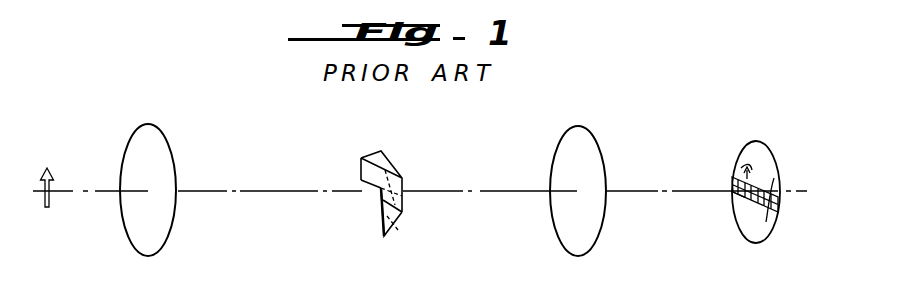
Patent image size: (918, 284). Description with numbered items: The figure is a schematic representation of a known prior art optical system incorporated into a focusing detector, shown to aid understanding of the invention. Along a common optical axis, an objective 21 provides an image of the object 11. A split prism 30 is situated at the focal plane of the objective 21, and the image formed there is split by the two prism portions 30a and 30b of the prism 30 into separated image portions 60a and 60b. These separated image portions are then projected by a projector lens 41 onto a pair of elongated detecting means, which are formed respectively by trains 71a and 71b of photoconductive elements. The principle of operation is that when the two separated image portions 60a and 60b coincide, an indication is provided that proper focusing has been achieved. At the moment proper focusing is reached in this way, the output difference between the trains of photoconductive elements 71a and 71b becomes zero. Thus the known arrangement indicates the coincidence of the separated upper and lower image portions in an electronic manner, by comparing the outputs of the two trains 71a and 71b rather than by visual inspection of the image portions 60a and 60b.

The object 11 is at (48, 208).
The objective 21 is at (171, 222).
The split prism 30 is at (393, 185).
The prism portion 30a is at (391, 169).
The prism portion 30b is at (402, 220).
The projector lens 41 is at (601, 228).
The separated image portion 60a is at (741, 168).
The separated image portion 60b is at (766, 222).
The train of photoconductive elements 71a is at (774, 178).
The train of photoconductive elements 71b is at (742, 196).